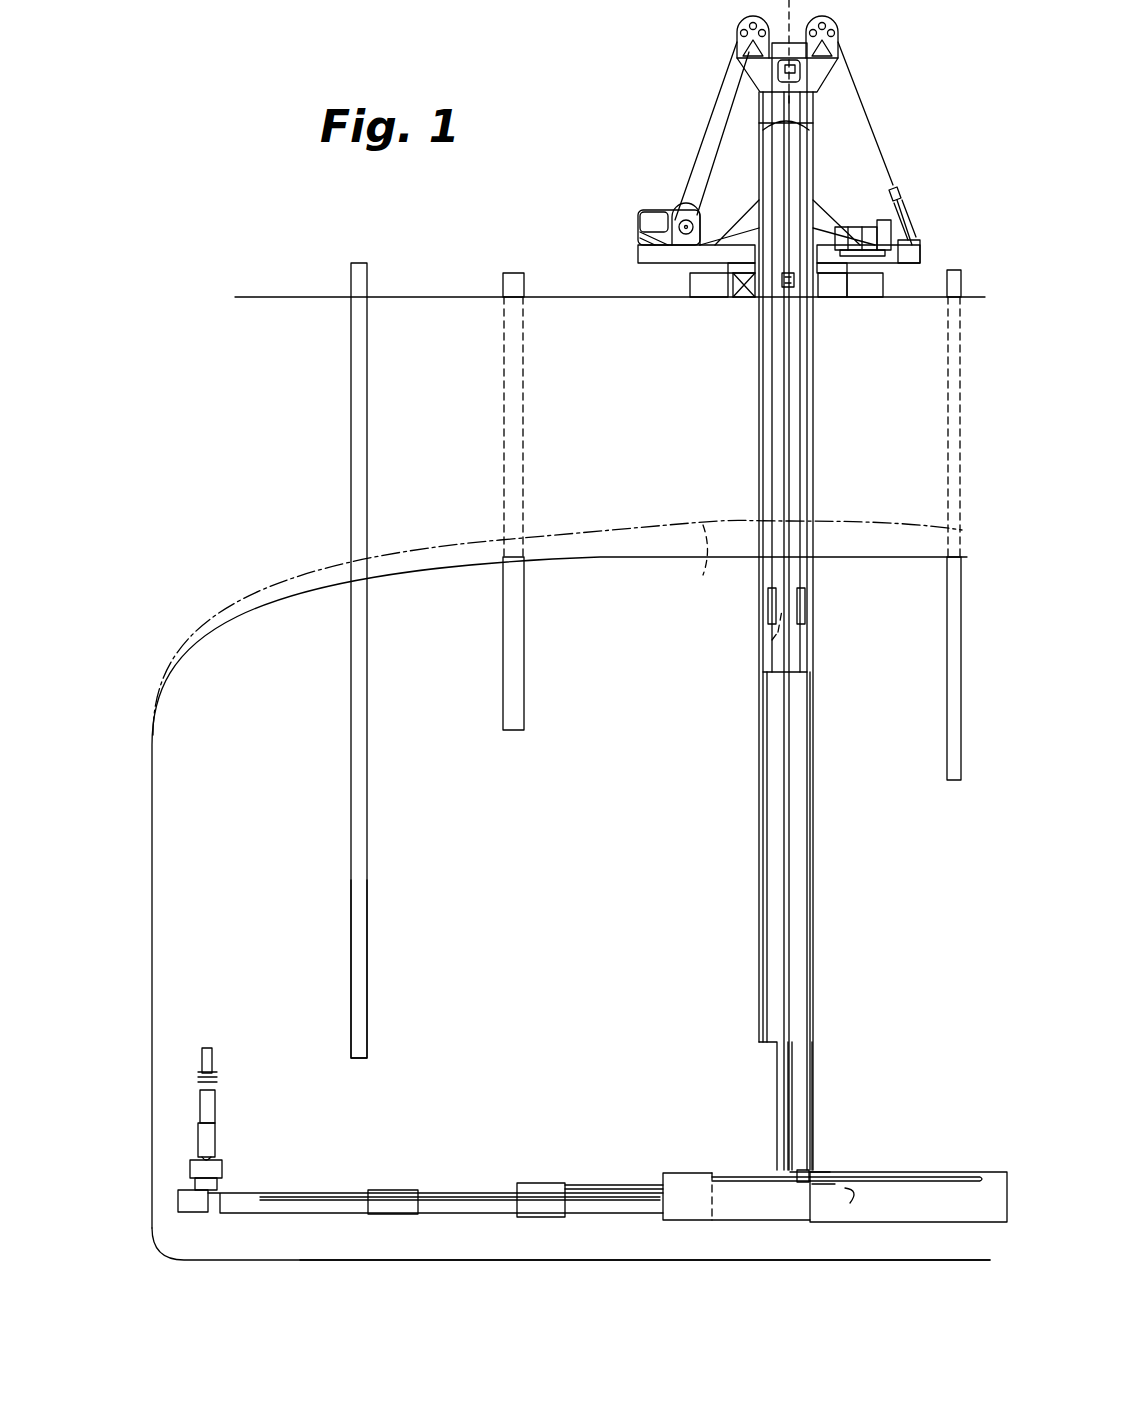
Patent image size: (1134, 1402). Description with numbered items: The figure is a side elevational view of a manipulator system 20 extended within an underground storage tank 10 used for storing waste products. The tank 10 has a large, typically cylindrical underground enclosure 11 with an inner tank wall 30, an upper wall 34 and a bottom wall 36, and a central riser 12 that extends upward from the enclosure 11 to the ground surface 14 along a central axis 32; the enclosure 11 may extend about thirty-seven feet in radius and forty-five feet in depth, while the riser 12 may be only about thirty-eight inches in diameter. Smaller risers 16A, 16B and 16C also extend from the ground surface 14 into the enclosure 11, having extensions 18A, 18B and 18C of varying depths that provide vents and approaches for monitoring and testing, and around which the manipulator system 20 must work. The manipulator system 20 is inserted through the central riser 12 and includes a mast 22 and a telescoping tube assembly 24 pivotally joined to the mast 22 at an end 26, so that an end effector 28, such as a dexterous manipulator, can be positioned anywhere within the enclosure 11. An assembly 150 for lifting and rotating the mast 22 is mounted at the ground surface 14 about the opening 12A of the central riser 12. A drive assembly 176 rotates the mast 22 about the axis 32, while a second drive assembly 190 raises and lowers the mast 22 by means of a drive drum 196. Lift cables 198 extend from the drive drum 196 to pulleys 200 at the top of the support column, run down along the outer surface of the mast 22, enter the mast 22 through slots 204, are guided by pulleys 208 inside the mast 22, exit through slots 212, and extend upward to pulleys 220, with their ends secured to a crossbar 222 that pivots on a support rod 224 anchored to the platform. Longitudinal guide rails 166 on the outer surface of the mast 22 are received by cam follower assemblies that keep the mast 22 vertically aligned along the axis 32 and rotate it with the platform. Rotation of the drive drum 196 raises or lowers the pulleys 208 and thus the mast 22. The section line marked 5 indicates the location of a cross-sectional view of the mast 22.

The underground storage tank 10 is at (973, 447).
The underground enclosure 11 is at (265, 605).
The central riser 12 is at (815, 402).
The opening of the central riser 12A is at (815, 302).
The ground surface 14 is at (262, 297).
The riser 16A is at (368, 272).
The riser 16B is at (526, 282).
The riser 16C is at (962, 278).
The extension 18A is at (368, 915).
The extension 18B is at (526, 645).
The extension 18C is at (945, 620).
The manipulator system 20 is at (900, 990).
The mast 22 is at (814, 895).
The telescoping tube assembly 24 is at (932, 1162).
The end 26 is at (812, 1173).
The end effector 28 is at (225, 1063).
The inner tank wall 30 is at (154, 940).
The central axis 32 is at (792, 5).
The upper wall 34 is at (703, 574).
The bottom wall 36 is at (418, 1258).
The assembly for lifting and rotating the mast 150 is at (688, 108).
The longitudinal guide rails 166 is at (790, 695).
The drive assembly 176 is at (852, 222).
The second drive assembly 190 is at (643, 205).
The drive drum 196 is at (686, 212).
The lift cables 198 is at (726, 72).
The pulleys 200 is at (750, 22).
The slots 204 is at (768, 614).
The pulleys 208 is at (772, 645).
The slots 212 is at (806, 618).
The pulleys 220 is at (832, 28).
The crossbar 222 is at (905, 192).
The support rod 224 is at (915, 216).
The section line 5- 5 is at (750, 1057).